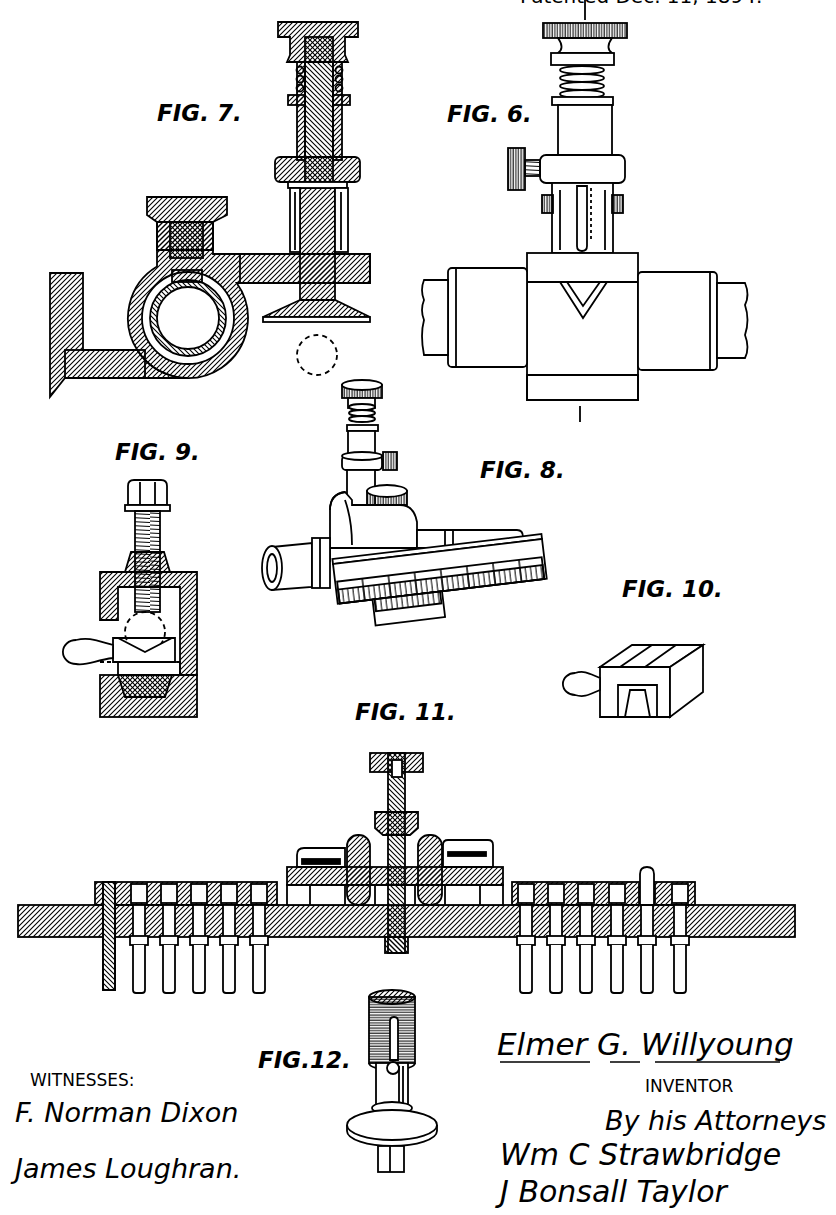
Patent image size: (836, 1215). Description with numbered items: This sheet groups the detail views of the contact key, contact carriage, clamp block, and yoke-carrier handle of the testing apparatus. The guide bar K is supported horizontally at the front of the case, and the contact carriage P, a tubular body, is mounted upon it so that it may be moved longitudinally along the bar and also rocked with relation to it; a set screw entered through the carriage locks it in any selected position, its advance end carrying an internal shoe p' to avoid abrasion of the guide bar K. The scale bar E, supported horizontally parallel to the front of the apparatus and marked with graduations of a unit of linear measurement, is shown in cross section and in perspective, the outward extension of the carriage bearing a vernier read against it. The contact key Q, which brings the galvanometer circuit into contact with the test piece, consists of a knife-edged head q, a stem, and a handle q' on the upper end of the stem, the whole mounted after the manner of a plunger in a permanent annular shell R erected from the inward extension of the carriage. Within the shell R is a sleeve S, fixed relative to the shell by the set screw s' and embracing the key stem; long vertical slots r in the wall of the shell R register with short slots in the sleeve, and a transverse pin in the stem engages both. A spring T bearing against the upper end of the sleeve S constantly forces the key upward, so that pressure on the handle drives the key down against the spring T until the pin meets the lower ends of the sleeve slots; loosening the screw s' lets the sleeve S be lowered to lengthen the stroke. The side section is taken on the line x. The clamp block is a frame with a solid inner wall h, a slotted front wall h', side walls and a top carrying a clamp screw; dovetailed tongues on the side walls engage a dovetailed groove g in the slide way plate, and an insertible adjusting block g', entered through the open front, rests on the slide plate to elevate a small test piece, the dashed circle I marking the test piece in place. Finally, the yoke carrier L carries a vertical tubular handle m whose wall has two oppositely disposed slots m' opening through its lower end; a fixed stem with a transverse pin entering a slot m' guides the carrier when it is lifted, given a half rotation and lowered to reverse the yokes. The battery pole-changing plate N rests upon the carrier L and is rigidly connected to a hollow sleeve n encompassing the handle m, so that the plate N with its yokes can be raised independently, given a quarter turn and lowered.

In FIG. 7, the handle q' is at (333, 41).
In FIG. 6, the handle q' is at (565, 44).
In FIG. 8, the handle q' is at (381, 396).
In FIG. 7, the contact key Q is at (343, 179).
In FIG. 7, the spring T is at (291, 78).
In FIG. 6, the spring T is at (606, 85).
In FIG. 8, the spring T is at (348, 415).
In FIG. 7, the sleeve S is at (343, 132).
In FIG. 6, the sleeve S is at (600, 133).
In FIG. 8, the sleeve S is at (350, 448).
In FIG. 7, the annular shell R is at (360, 170).
In FIG. 6, the annular shell R is at (625, 170).
In FIG. 8, the annular shell R is at (362, 461).
In FIG. 7, the long vertical slots r is at (292, 233).
In FIG. 6, the long vertical slots r is at (590, 235).
In FIG. 7, the head q is at (327, 315).
In FIG. 6, the head q is at (583, 314).
In FIG. 7, the contact carriage P is at (150, 280).
In FIG. 6, the contact carriage P is at (564, 326).
In FIG. 8, the contact carriage P is at (330, 525).
In FIG. 7, the internal shoe p' is at (176, 252).
In FIG. 7, the guide bar K is at (215, 320).
In FIG. 6, the guide bar K is at (745, 318).
In FIG. 8, the guide bar K is at (515, 528).
In FIG. 7, the scale bar E is at (119, 317).
In FIG. 8, the scale bar E is at (545, 554).
In FIG. 7, the ball I is at (297, 357).
In FIG. 9, the ball I is at (120, 630).
In FIG. 6, the set screw s' is at (510, 169).
In FIG. 8, the set screw s' is at (402, 464).
In FIG. 6, the section line x— x is at (578, 428).
In FIG. 9, the front wall h' is at (114, 561).
In FIG. 9, the inner wall h is at (159, 613).
In FIG. 9, the adjusting block g' is at (143, 652).
In FIG. 10, the adjusting block g' is at (652, 681).
In FIG. 9, the dovetailed groove g is at (127, 698).
In FIG. 11, the yoke-carrying plate L is at (290, 868).
In FIG. 11, the battery pole-changing plate N is at (333, 850).
In FIG. 11, the hollow sleeve n is at (360, 838).
In FIG. 11, the tubular handle m is at (406, 853).
In FIG. 12, the tubular handle m is at (376, 1030).
In FIG. 12, the slots m' is at (423, 1038).